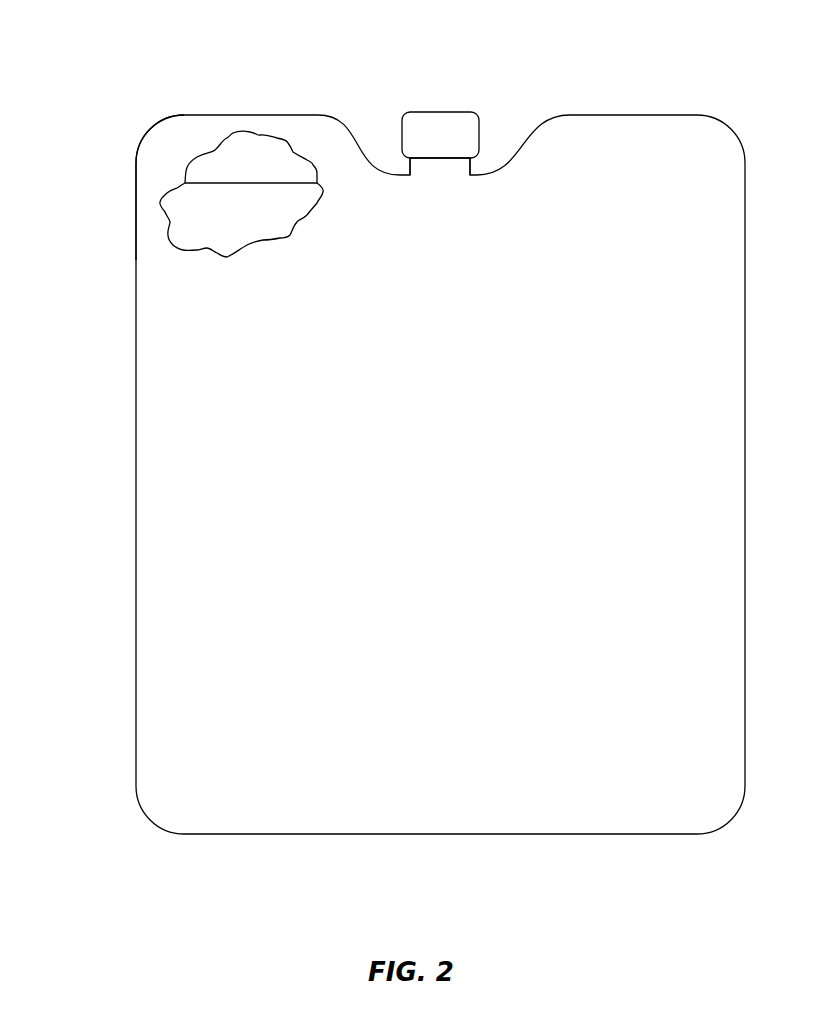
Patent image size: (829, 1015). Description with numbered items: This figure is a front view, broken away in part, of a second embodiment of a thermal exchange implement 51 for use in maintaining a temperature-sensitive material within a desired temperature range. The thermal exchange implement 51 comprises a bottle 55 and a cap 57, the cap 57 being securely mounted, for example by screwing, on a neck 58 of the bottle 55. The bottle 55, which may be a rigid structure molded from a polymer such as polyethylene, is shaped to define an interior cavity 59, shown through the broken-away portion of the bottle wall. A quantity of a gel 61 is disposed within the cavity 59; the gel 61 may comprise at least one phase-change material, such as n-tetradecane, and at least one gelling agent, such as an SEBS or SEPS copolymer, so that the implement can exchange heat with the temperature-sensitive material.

The thermal exchange implement 51 is at (612, 72).
The bottle 55 is at (168, 135).
The cap 57 is at (457, 120).
The neck 58 is at (410, 167).
The interior cavity 59 is at (252, 148).
The gel 61 is at (193, 225).